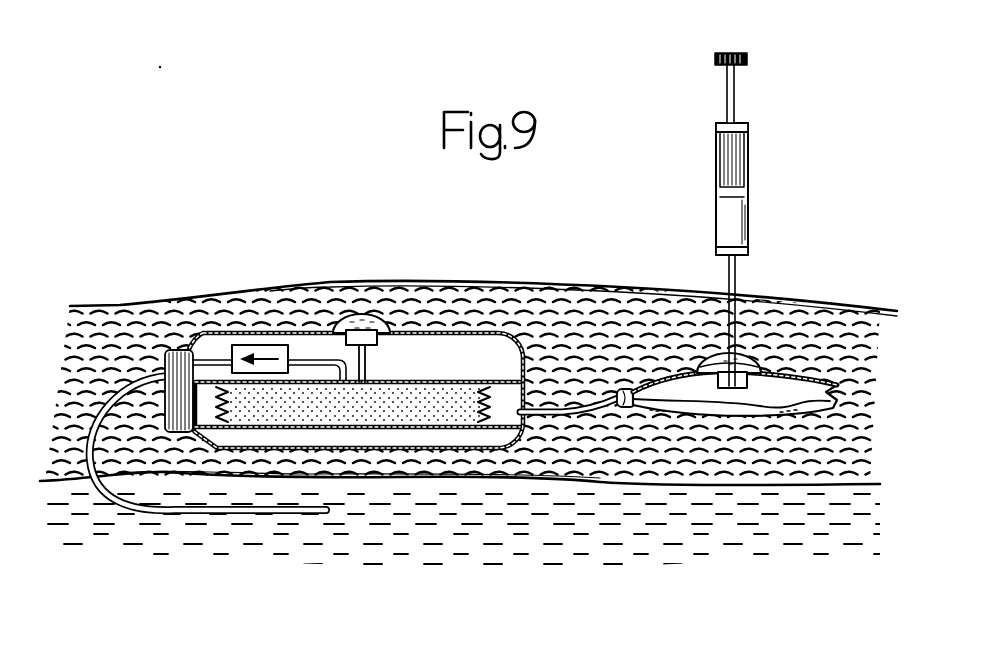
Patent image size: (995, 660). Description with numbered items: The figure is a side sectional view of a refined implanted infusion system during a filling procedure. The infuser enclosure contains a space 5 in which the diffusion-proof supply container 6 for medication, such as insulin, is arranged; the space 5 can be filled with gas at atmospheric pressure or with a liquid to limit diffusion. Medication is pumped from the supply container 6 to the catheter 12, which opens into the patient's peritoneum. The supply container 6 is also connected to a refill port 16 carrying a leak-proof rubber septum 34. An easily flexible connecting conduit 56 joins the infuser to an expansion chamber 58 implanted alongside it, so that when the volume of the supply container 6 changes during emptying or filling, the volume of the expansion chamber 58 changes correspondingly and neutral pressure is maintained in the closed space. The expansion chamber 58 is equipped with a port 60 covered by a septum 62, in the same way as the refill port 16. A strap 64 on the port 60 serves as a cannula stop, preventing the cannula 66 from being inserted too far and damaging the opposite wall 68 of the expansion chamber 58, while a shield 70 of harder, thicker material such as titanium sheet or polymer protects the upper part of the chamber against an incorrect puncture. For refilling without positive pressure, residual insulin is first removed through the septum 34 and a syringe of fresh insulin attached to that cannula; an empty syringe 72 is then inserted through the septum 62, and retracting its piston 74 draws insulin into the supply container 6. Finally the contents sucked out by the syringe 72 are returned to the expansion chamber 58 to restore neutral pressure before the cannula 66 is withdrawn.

The space 5 is at (398, 434).
The supply container 6 is at (424, 396).
The catheter 12 is at (150, 510).
The refill port 16 is at (390, 328).
The septum 34 is at (340, 316).
The connecting conduit 56 is at (558, 412).
The expansion chamber 58 is at (803, 420).
The port 60 is at (703, 351).
The septum 62 is at (758, 355).
The strap 64 is at (686, 357).
The cannula 66 is at (738, 268).
The opposite wall 68 is at (720, 420).
The shield 70 is at (808, 371).
The syringe 72 is at (716, 157).
The piston 74 is at (728, 90).